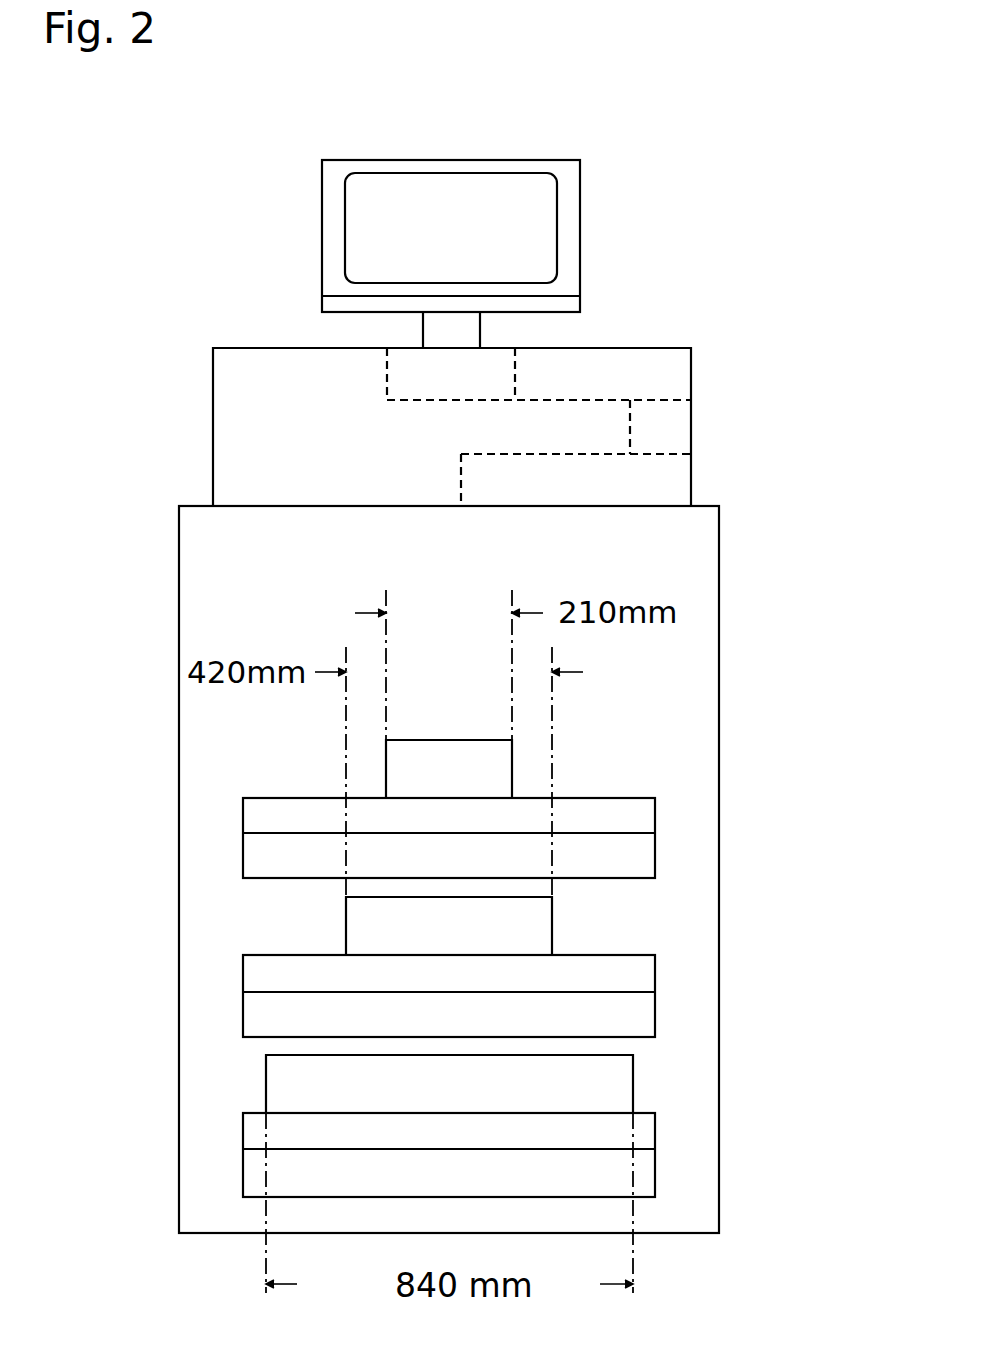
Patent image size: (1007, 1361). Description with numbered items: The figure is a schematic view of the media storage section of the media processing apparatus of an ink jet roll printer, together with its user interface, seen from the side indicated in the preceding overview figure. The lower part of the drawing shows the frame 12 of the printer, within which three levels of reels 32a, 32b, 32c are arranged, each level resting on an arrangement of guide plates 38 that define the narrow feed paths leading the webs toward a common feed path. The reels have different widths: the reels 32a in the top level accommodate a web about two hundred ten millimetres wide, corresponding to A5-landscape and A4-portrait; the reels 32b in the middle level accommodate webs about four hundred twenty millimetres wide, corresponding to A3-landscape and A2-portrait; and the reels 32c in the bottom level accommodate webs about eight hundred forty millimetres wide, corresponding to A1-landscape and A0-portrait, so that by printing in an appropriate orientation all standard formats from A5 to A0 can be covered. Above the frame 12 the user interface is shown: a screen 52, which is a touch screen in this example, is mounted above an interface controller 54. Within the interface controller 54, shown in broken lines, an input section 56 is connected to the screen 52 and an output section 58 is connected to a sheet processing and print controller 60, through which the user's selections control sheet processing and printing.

The frame 12 is at (179, 630).
The screen 52 is at (572, 213).
The interface controller 54 is at (680, 377).
The input section 56 is at (403, 377).
The output section 58 is at (680, 423).
The sheet processing and print controller 60 is at (680, 480).
The reel 32a is at (440, 747).
The reel 32b is at (357, 927).
The reel 32c is at (282, 1085).
The guide plate 38 is at (590, 820).